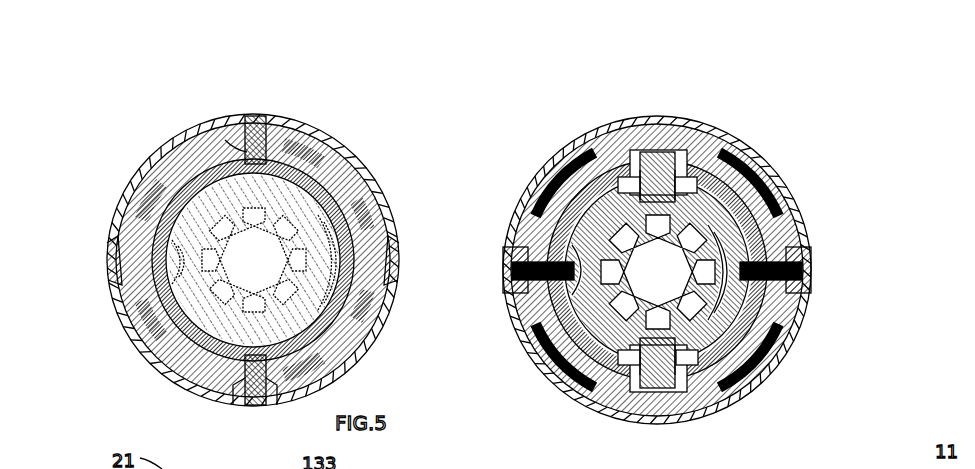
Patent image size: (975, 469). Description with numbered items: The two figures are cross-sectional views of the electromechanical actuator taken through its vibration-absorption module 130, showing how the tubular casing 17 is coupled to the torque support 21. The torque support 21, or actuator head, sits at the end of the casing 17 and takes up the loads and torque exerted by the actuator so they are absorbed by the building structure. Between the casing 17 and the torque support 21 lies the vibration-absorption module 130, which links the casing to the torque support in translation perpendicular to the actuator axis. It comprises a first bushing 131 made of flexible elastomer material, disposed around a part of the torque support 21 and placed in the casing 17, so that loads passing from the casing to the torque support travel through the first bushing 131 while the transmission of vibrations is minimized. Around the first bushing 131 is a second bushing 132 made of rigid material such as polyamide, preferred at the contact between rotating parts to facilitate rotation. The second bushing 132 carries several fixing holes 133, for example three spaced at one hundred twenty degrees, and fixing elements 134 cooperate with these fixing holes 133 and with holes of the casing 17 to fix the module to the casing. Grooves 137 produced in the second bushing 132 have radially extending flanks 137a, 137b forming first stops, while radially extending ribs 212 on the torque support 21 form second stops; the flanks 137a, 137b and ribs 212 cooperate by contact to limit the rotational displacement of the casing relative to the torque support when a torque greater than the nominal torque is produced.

In FIG. 5, the casing 17 is at (330, 141).
In FIG. 6, the casing 17 is at (780, 189).
In FIG. 5, the torque support 21 is at (208, 317).
In FIG. 6, the torque support 21 is at (567, 370).
In FIG. 5, the vibration-absorption module 130 is at (293, 152).
In FIG. 6, the vibration-absorption module 130 is at (742, 153).
In FIG. 5, the first bushing 131 is at (345, 215).
In FIG. 6, the first bushing 131 is at (557, 178).
In FIG. 5, the second bushing 132 is at (343, 190).
In FIG. 6, the second bushing 132 is at (687, 158).
In FIG. 5, the fixing holes 133 is at (247, 152).
In FIG. 5, the fixing elements 134 is at (258, 116).
In FIG. 5, the grooves 137 is at (120, 258).
In FIG. 6, the grooves 137 is at (655, 148).
In FIG. 6, the flank 137a is at (626, 168).
In FIG. 6, the flank 137b is at (663, 150).
In FIG. 6, the ribs 212 is at (648, 150).